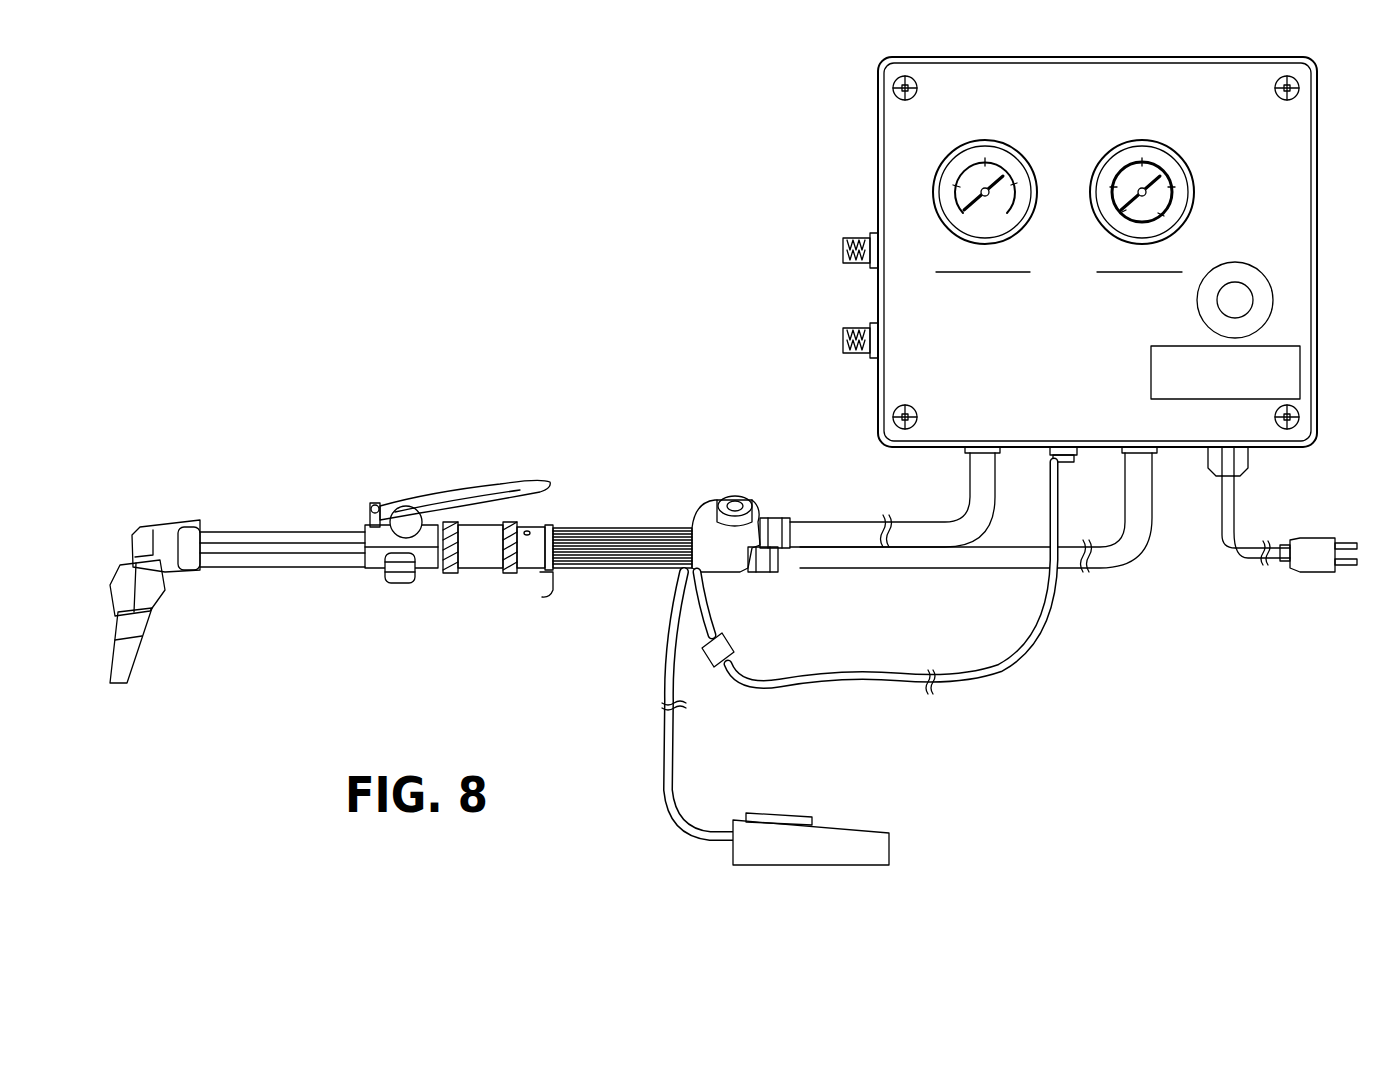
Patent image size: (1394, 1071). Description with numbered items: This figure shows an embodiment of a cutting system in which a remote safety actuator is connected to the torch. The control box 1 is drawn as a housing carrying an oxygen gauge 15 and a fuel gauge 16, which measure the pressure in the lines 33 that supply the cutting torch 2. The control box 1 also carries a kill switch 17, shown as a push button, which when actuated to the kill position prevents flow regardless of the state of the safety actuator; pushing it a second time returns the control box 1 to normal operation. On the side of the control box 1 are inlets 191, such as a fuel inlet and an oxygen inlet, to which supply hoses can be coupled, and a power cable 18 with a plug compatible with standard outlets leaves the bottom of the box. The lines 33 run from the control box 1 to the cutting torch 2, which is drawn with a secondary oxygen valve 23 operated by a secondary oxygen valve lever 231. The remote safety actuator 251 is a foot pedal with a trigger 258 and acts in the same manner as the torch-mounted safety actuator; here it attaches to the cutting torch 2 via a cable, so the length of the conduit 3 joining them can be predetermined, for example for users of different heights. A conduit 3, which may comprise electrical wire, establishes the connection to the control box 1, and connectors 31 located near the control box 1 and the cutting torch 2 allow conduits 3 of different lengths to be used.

The control box 1 is at (762, 187).
The cutting torch 2 is at (604, 498).
The conduit 3 is at (1028, 664).
The oxygen gauge 15 is at (1192, 183).
The fuel gauge 16 is at (935, 180).
The kill switch 17 is at (1272, 304).
The power cable 18 is at (1280, 548).
The secondary oxygen valve 23 is at (372, 520).
The connectors 31 is at (733, 646).
The lines 33 is at (862, 520).
The inlets 191 is at (843, 252).
The secondary oxygen valve lever 231 is at (502, 485).
The remote safety actuator 251 is at (890, 852).
The trigger 258 is at (780, 812).